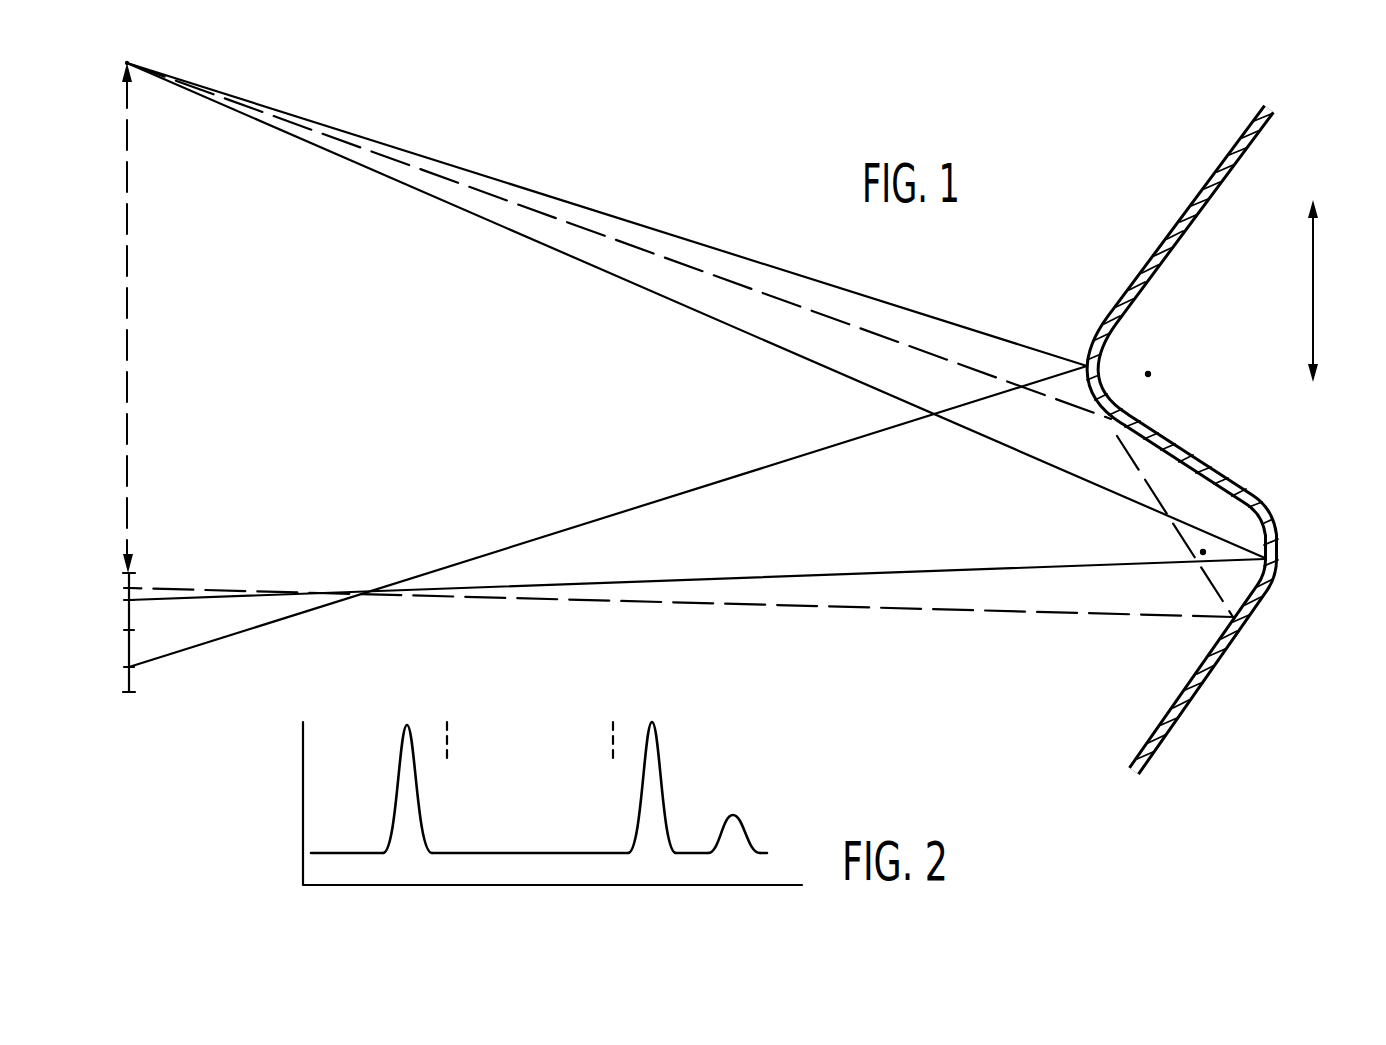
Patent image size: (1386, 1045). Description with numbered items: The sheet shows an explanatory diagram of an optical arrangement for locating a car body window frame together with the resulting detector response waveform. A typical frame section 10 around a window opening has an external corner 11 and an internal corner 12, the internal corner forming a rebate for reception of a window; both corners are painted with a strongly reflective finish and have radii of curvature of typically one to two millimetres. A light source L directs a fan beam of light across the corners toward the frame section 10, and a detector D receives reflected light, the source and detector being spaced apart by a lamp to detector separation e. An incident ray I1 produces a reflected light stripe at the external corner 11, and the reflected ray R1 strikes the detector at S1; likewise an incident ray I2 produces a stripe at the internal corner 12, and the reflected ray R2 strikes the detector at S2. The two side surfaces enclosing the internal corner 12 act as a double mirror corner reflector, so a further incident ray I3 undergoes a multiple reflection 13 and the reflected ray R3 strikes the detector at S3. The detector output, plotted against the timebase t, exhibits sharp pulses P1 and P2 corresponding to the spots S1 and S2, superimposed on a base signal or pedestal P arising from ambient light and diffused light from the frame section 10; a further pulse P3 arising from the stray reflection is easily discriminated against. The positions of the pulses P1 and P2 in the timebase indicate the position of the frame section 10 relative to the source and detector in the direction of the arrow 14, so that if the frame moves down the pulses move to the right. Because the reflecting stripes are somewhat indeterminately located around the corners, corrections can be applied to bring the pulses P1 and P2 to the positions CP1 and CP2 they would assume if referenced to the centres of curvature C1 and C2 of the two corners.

In FIG. 1, the frame section 10 is at (1193, 208).
In FIG. 1, the external corner 11 is at (1098, 373).
In FIG. 1, the internal corner 12 is at (1276, 530).
In FIG. 1, the multiple reflection 13 is at (1074, 631).
In FIG. 1, the arrow 14 is at (1315, 292).
In FIG. 1, the light source L is at (108, 63).
In FIG. 1, the lamp to detector separation e is at (125, 318).
In FIG. 1, the detector D is at (131, 677).
In FIG. 1, the spot of light S1 is at (121, 665).
In FIG. 1, the spot of light S2 is at (121, 603).
In FIG. 1, the stray reflection spot S3 is at (125, 586).
In FIG. 1, the incident ray I1 is at (723, 255).
In FIG. 1, the incident ray I2 is at (652, 292).
In FIG. 1, the incident ray I3 is at (863, 330).
In FIG. 1, the reflected ray R1 is at (645, 507).
In FIG. 1, the reflected ray R2 is at (818, 575).
In FIG. 1, the reflected ray R3 is at (933, 610).
In FIG. 1, the centre of curvature C1 is at (1152, 375).
In FIG. 1, the centre of curvature C2 is at (1198, 553).
In FIG. 2, the base signal P is at (560, 853).
In FIG. 2, the pulse P1 is at (400, 752).
In FIG. 2, the pulse P2 is at (658, 743).
In FIG. 2, the pulse P3 is at (747, 827).
In FIG. 2, the corrected pulse position CP1 is at (457, 723).
In FIG. 2, the corrected pulse position CP2 is at (613, 725).
In FIG. 2, the time axis t is at (828, 908).